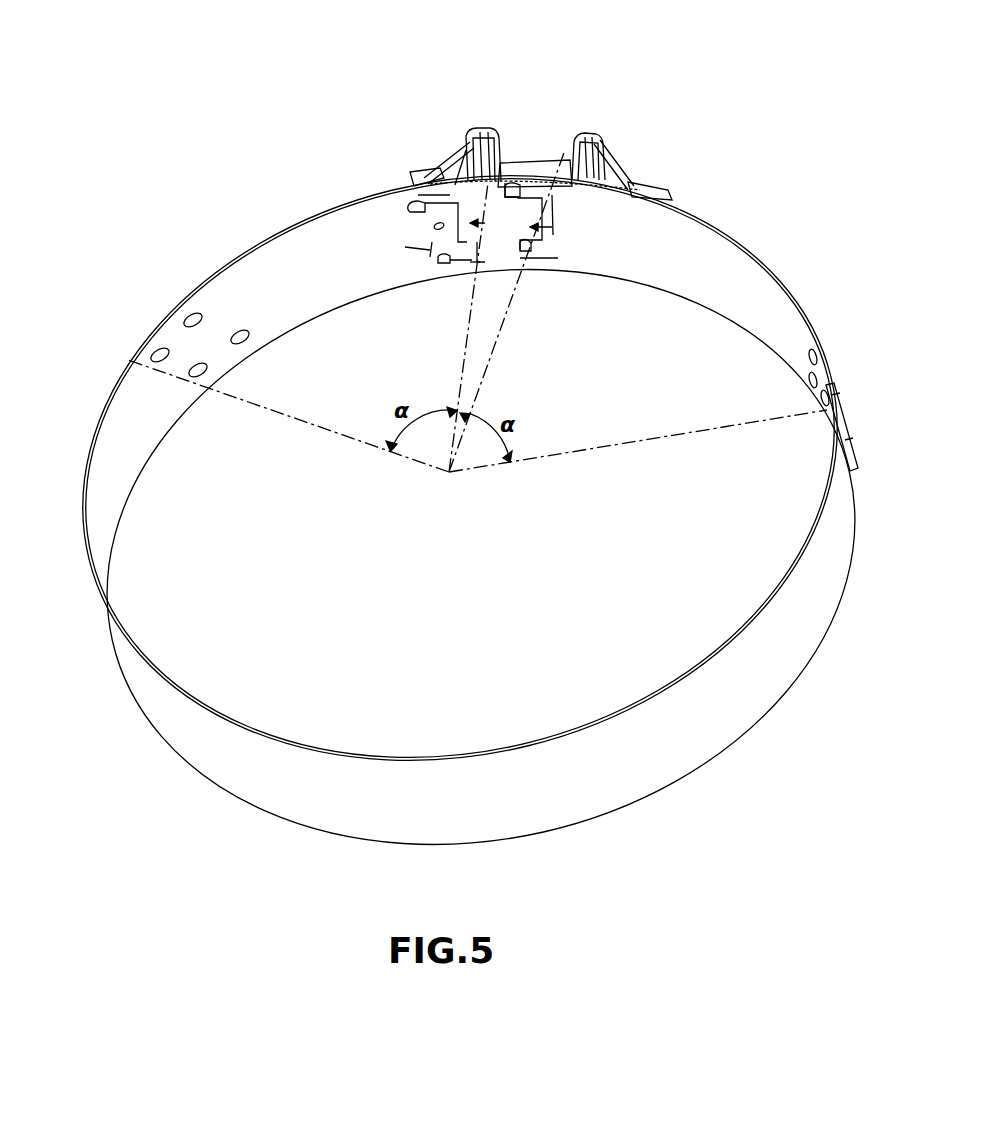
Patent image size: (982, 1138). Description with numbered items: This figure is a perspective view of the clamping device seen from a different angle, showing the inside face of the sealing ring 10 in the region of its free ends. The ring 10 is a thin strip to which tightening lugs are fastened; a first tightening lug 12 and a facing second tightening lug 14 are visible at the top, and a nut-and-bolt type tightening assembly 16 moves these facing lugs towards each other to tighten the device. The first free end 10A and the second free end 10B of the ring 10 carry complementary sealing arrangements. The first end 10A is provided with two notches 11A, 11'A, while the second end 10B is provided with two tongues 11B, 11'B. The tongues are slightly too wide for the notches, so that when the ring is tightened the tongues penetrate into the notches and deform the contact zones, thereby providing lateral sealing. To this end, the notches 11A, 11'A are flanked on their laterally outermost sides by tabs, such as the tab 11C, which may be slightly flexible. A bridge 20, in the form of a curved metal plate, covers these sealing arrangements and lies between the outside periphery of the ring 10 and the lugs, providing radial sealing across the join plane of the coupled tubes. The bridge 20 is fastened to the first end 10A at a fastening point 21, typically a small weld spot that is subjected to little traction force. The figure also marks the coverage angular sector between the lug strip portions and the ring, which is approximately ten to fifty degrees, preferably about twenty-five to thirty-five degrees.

The sealing ring 10 is at (110, 493).
The first tightening lug 12 is at (478, 128).
The second tightening lug 14 is at (598, 134).
The tightening assembly 16 is at (530, 158).
The bridge 20 is at (508, 234).
The fastening point 21 is at (436, 228).
The first free end 10A is at (481, 262).
The second free end 10B is at (560, 222).
The notch 11A is at (444, 264).
The tongue 11B is at (530, 252).
The tab 11C is at (478, 263).
The notch 11'A is at (382, 215).
The tongue 11'B is at (562, 202).